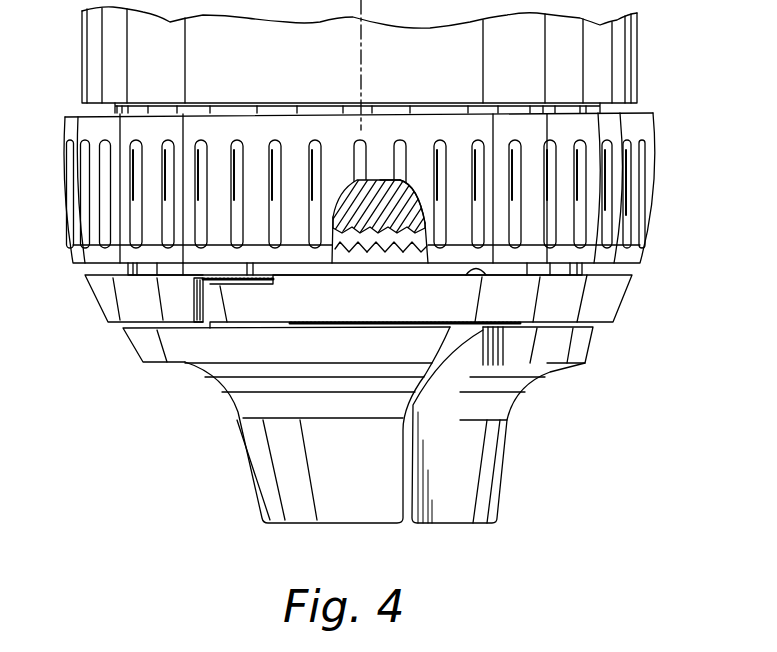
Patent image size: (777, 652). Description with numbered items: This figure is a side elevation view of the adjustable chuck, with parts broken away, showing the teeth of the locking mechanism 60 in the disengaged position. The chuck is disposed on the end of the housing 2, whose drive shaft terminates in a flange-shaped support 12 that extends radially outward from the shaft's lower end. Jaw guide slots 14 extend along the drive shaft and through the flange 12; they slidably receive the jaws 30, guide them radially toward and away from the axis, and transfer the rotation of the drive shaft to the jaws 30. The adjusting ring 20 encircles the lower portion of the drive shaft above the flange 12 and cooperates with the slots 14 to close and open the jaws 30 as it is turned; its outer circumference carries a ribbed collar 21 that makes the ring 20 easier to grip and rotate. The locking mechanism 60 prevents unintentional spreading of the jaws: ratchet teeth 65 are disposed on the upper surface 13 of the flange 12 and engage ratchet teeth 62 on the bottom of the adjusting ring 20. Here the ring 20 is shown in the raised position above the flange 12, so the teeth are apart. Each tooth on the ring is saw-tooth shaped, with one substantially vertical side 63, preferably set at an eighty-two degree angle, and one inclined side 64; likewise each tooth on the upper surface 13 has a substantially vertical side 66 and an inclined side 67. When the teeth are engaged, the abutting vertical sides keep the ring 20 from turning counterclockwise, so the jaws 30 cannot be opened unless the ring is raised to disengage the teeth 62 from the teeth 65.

The housing 2 is at (637, 50).
The adjusting ring 20 is at (656, 134).
The ribbed collar 21 is at (636, 184).
The support 12 is at (622, 306).
The upper surface 13 is at (480, 274).
The jaw guide slots 14 is at (186, 302).
The jaws 30 is at (230, 401).
The locking mechanism 60 is at (356, 182).
The ratchet teeth 62 is at (356, 206).
The vertical side 63 is at (388, 181).
The inclined side 64 is at (411, 183).
The ratchet teeth 65 is at (392, 254).
The vertical side 66 is at (352, 254).
The inclined side 67 is at (417, 254).